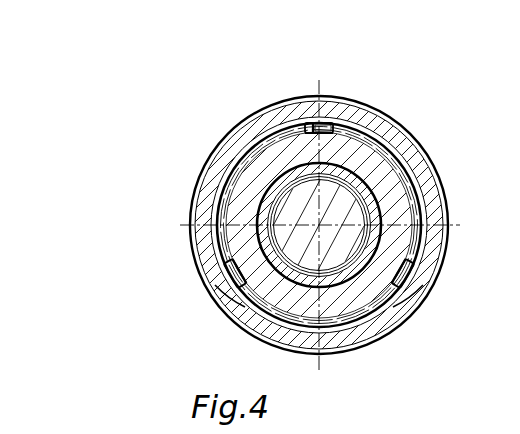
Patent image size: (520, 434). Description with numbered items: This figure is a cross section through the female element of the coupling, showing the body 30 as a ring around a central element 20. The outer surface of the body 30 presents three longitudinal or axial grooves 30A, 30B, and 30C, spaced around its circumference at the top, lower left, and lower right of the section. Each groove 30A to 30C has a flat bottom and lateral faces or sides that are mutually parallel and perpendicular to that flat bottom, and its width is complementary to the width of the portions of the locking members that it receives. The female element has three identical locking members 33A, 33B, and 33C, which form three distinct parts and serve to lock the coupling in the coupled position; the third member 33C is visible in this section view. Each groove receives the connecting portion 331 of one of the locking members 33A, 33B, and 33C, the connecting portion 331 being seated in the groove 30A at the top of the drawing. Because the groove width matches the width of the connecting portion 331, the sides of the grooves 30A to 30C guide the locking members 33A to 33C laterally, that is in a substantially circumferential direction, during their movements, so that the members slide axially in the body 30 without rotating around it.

The shaft / tube 20 is at (383, 172).
The body 30 is at (362, 157).
The longitudinal groove 30A is at (307, 124).
The longitudinal groove 30B is at (232, 271).
The longitudinal groove 30C is at (404, 282).
The connecting portion 331 is at (322, 125).
The locking member 33A is at (337, 124).
The locking member 33B is at (240, 284).
The locking member 33C is at (405, 268).